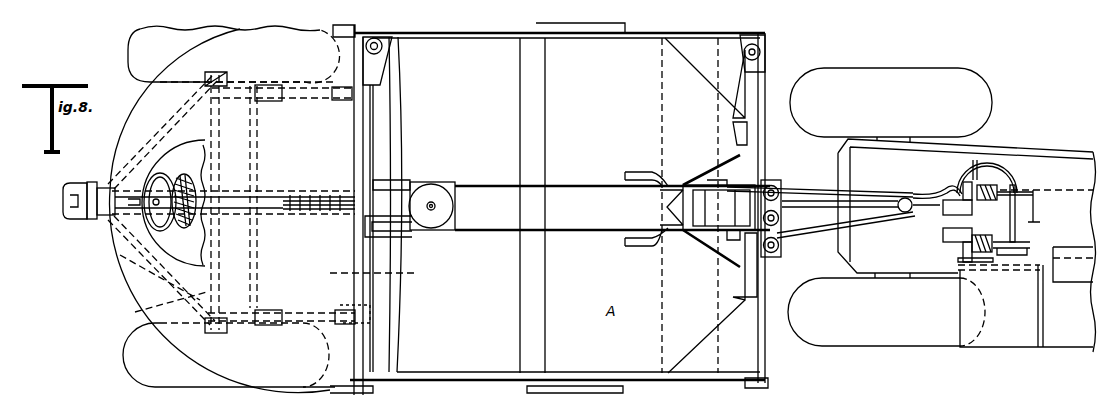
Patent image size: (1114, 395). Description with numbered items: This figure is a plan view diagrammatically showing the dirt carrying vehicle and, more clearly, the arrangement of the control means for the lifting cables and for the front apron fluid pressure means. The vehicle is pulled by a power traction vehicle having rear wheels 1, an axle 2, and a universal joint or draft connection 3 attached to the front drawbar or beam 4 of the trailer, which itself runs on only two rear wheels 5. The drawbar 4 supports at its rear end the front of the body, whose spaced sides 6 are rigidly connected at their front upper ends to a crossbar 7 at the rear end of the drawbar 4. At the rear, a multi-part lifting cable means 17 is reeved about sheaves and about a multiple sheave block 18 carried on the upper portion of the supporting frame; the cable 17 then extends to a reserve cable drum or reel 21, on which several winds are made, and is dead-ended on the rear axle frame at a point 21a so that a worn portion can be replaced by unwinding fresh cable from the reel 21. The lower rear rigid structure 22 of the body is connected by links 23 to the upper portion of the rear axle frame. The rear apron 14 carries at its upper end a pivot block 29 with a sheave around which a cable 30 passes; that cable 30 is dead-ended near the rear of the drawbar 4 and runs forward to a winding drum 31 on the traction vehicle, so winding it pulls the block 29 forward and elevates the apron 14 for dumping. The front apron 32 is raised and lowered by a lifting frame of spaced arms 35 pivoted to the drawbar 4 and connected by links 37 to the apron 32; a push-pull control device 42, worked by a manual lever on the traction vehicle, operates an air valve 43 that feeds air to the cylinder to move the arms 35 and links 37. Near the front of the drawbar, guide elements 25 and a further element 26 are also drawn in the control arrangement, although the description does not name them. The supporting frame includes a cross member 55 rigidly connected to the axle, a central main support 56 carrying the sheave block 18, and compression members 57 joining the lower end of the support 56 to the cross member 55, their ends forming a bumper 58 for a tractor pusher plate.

The rear wheels 1 is at (915, 332).
The axle 2 is at (903, 140).
The universal joint or draft connection 3 is at (918, 192).
The front drawbar or beam 4 is at (810, 214).
The rear wheels 5 is at (135, 50).
The sides 6 is at (515, 40).
The crossbar 7 is at (767, 357).
The rear apron 14 is at (407, 122).
The lifting cable means 17 is at (240, 228).
The multiple sheave block 18 is at (320, 190).
The reserve cable drum or reel 21 is at (164, 222).
The dead-end point 21a is at (290, 216).
The rigid structure 22 is at (383, 277).
The links 23 is at (297, 100).
The guide rollers 25 is at (778, 185).
The drum 26 is at (994, 176).
The pivot block 29 is at (437, 200).
The cable 30 is at (595, 232).
The winding drum 31 is at (990, 232).
The front apron 32 is at (656, 115).
The lifting frame arms 35 is at (668, 185).
The links 37 is at (636, 172).
The push-pull control device 42 is at (825, 182).
The air valve 43 is at (712, 162).
The cross member 55 is at (135, 311).
The central main support 56 is at (247, 186).
The compression members 57 is at (150, 130).
The bumper 58 is at (82, 221).